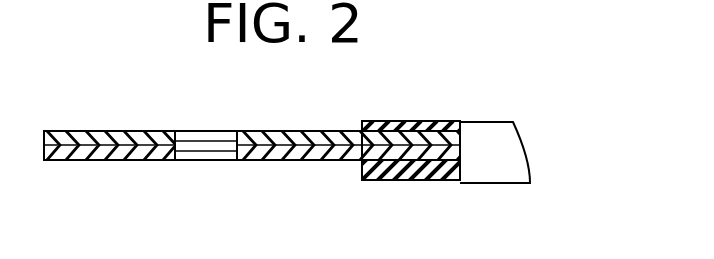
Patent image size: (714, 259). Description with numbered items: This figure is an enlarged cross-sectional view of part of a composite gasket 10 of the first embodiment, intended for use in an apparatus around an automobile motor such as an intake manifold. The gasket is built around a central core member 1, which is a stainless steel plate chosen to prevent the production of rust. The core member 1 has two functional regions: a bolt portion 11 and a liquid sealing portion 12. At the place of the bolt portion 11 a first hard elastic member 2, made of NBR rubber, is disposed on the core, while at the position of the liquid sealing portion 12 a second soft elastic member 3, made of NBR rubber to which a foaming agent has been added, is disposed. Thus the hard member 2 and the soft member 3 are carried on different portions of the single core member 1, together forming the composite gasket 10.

The composite gasket 10 is at (315, 139).
The central core member 1 is at (257, 151).
The first hard elastic member 2 is at (265, 132).
The bolt portion 11 is at (162, 161).
The second soft elastic member 3 is at (394, 122).
The liquid sealing portion 12 is at (460, 122).